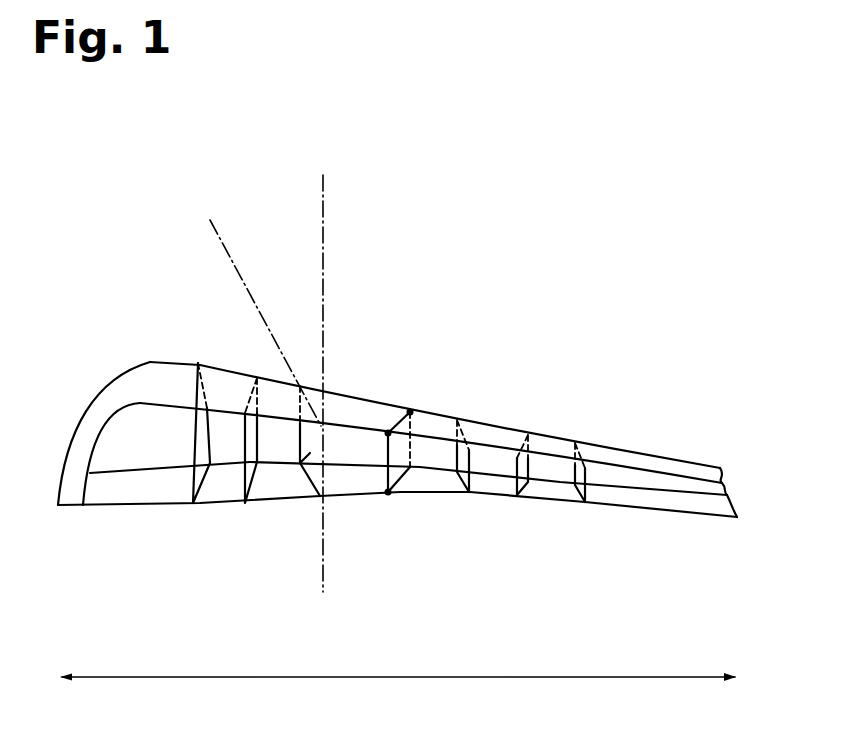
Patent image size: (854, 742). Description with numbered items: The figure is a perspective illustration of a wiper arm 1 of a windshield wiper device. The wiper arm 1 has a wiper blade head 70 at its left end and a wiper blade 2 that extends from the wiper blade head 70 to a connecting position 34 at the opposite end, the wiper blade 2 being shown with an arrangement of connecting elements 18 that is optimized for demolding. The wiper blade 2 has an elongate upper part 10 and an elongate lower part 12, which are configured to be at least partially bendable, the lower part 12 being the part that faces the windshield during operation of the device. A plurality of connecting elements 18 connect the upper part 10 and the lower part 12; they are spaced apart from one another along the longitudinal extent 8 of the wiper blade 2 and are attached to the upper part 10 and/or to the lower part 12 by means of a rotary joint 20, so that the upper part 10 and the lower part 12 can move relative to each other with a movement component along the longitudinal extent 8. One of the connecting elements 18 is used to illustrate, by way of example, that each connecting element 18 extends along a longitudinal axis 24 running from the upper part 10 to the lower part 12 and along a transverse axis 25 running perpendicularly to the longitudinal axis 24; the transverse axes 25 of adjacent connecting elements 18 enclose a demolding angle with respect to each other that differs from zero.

The wiper arm 1 is at (656, 250).
The wiper blade 2 is at (528, 369).
The longitudinal extent 8 is at (533, 677).
The elongate upper part 10 is at (376, 403).
The elongate lower part 12 is at (346, 496).
The connecting elements 18 is at (247, 488).
The rotary joint 20 is at (410, 410).
The longitudinal axis 24 is at (325, 217).
The transverse axis 25 is at (217, 230).
The connecting position 34 is at (736, 443).
The wiper blade head 70 is at (130, 352).